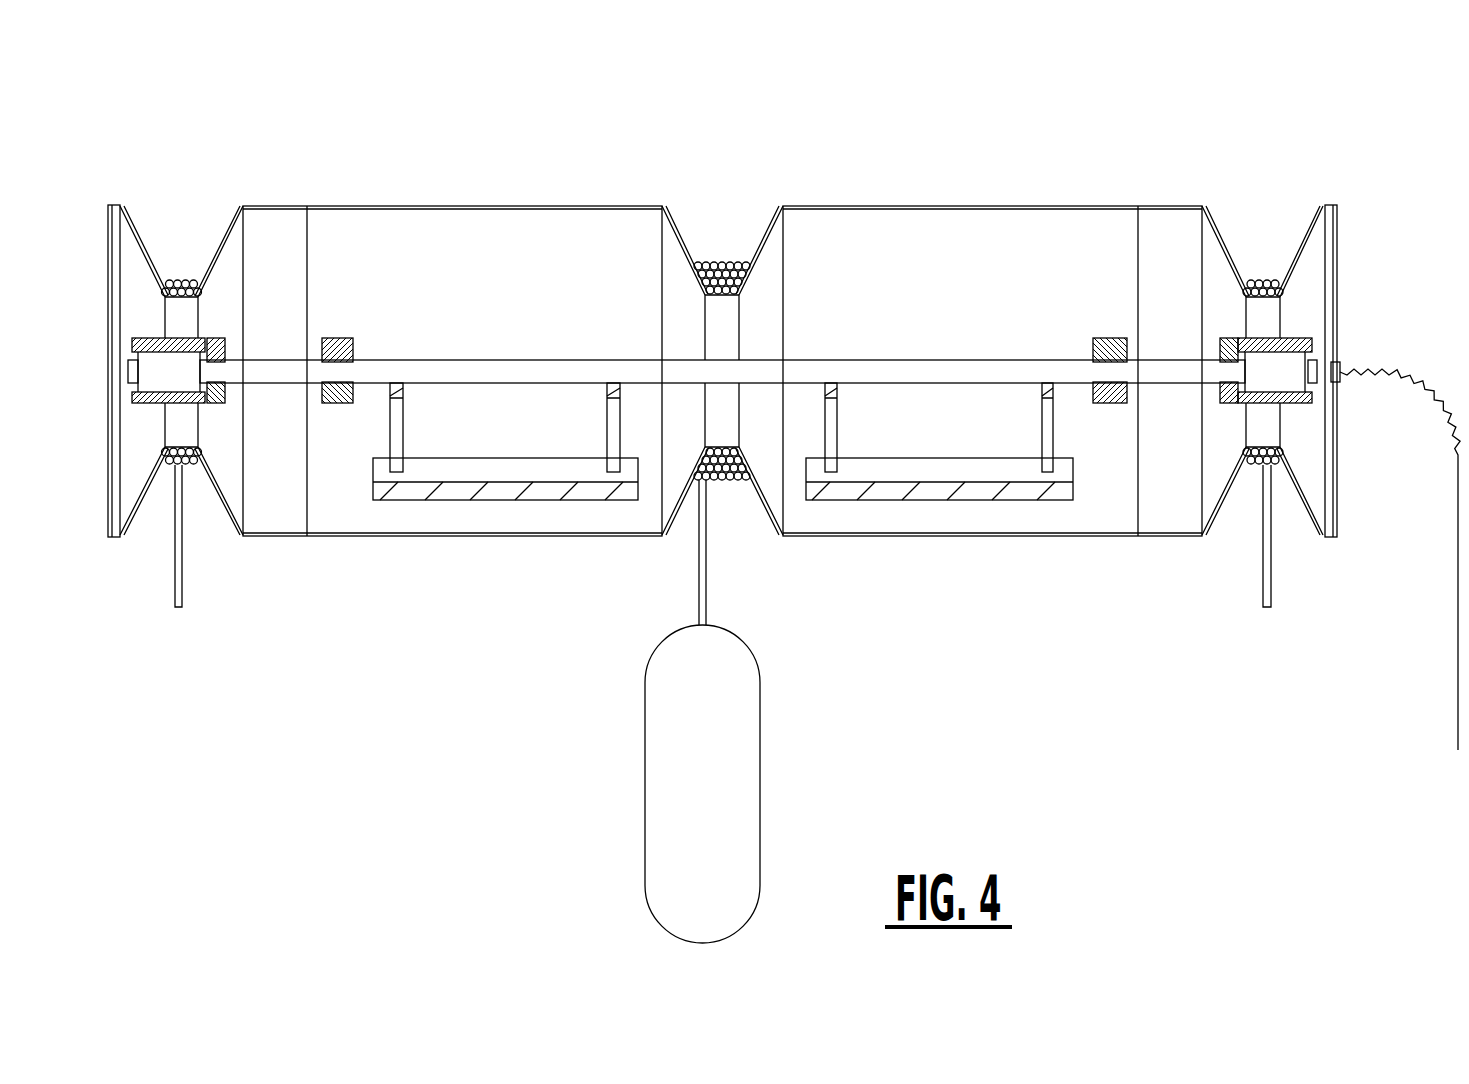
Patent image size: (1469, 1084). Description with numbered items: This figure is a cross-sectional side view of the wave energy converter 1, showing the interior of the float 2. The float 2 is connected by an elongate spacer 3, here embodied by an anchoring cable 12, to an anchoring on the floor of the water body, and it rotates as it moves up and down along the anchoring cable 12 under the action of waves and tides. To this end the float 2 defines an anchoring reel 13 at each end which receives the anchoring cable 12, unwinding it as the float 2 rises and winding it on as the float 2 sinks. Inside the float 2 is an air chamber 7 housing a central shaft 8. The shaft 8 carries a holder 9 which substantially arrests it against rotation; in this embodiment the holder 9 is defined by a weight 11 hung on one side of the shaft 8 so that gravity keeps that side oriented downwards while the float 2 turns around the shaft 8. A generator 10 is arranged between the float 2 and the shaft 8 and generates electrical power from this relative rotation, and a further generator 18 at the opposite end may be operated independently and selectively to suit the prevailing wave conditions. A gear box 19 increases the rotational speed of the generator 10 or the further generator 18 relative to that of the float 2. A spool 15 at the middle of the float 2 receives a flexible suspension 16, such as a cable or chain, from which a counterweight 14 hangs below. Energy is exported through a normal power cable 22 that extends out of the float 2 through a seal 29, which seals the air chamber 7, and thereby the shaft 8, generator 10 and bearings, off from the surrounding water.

The wave energy converter 1 is at (1340, 112).
The float 2 is at (858, 207).
The elongate spacer 3 is at (764, 539).
The air chamber 7 is at (445, 257).
The shaft 8 is at (547, 373).
The holder 9 is at (723, 491).
The generator 10 is at (145, 338).
The weight 11 is at (522, 477).
The anchoring cable 12 is at (180, 580).
The anchoring reel 13 is at (185, 245).
The counterweight 14 is at (670, 790).
The spool 15 is at (714, 220).
The flexible suspension 16 is at (700, 590).
The further generator 18 is at (1298, 338).
The gear box 19 is at (287, 227).
The power cable 22 is at (1393, 372).
The seal 29 is at (1343, 378).